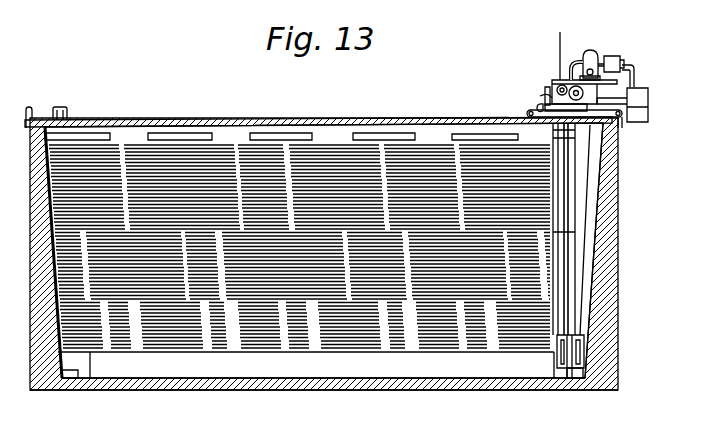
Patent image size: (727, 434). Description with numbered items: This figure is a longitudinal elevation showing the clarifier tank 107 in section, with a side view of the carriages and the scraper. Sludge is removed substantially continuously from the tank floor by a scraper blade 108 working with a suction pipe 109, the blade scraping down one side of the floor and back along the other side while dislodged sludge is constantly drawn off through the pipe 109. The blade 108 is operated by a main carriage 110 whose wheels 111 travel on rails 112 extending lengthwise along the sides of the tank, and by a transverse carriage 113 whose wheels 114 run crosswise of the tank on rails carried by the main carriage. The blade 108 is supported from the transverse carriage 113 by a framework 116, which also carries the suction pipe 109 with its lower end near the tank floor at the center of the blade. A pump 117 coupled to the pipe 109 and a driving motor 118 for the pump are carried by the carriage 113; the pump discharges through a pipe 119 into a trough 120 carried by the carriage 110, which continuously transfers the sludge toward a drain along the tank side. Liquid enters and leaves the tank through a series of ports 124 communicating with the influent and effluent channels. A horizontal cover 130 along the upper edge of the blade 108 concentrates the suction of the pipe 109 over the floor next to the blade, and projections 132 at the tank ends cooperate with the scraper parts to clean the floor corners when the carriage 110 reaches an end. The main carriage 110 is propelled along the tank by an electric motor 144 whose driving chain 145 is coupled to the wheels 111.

The tank 107 is at (617, 232).
The scraper blade 108 is at (515, 391).
The suction pipe 109 is at (563, 183).
The main carriage 110 is at (543, 118).
The wheels 111 is at (533, 111).
The rails 112 is at (330, 120).
The transverse carriage 113 is at (553, 80).
The wheels 114 is at (547, 84).
The framework 116 is at (553, 196).
The pump 117 is at (588, 52).
The driving motor 118 is at (614, 56).
The pipe 119 is at (636, 70).
The trough 120 is at (650, 96).
The ports 124 is at (163, 133).
The horizontal cover 130 is at (578, 351).
The projections 132 is at (65, 379).
The electric motor 144 is at (561, 47).
The driving chain 145 is at (545, 98).